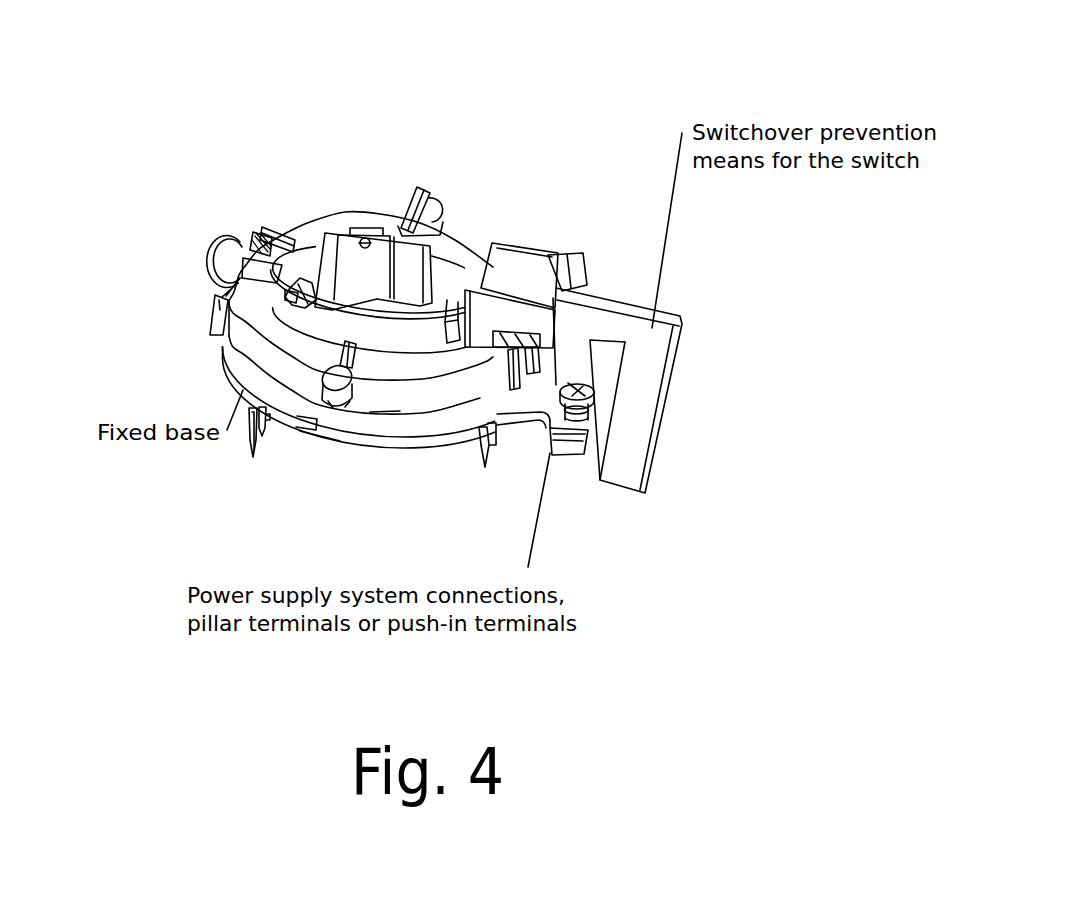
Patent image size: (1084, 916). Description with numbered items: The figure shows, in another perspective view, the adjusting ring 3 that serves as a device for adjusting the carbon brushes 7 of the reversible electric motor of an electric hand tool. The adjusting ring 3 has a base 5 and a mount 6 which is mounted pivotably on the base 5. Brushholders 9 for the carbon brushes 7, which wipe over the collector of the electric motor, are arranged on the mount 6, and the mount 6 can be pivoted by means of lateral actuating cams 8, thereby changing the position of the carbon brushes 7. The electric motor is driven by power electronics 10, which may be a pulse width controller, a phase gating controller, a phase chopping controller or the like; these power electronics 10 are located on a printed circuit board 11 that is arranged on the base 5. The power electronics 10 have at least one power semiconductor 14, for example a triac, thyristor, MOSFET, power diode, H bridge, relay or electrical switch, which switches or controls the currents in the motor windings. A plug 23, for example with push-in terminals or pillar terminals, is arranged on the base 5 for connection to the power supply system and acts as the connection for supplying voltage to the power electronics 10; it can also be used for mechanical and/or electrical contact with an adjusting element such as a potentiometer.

The adjusting ring 3 is at (338, 147).
The base 5 is at (336, 437).
The mount 6 is at (383, 403).
The carbon brushes 7 is at (305, 262).
The actuating cams 8 is at (335, 390).
The brushholders 9 is at (222, 240).
The power electronics 10 is at (357, 225).
The printed circuit board 11 is at (568, 428).
The power semiconductor 14 is at (423, 190).
The plug 23 is at (553, 453).